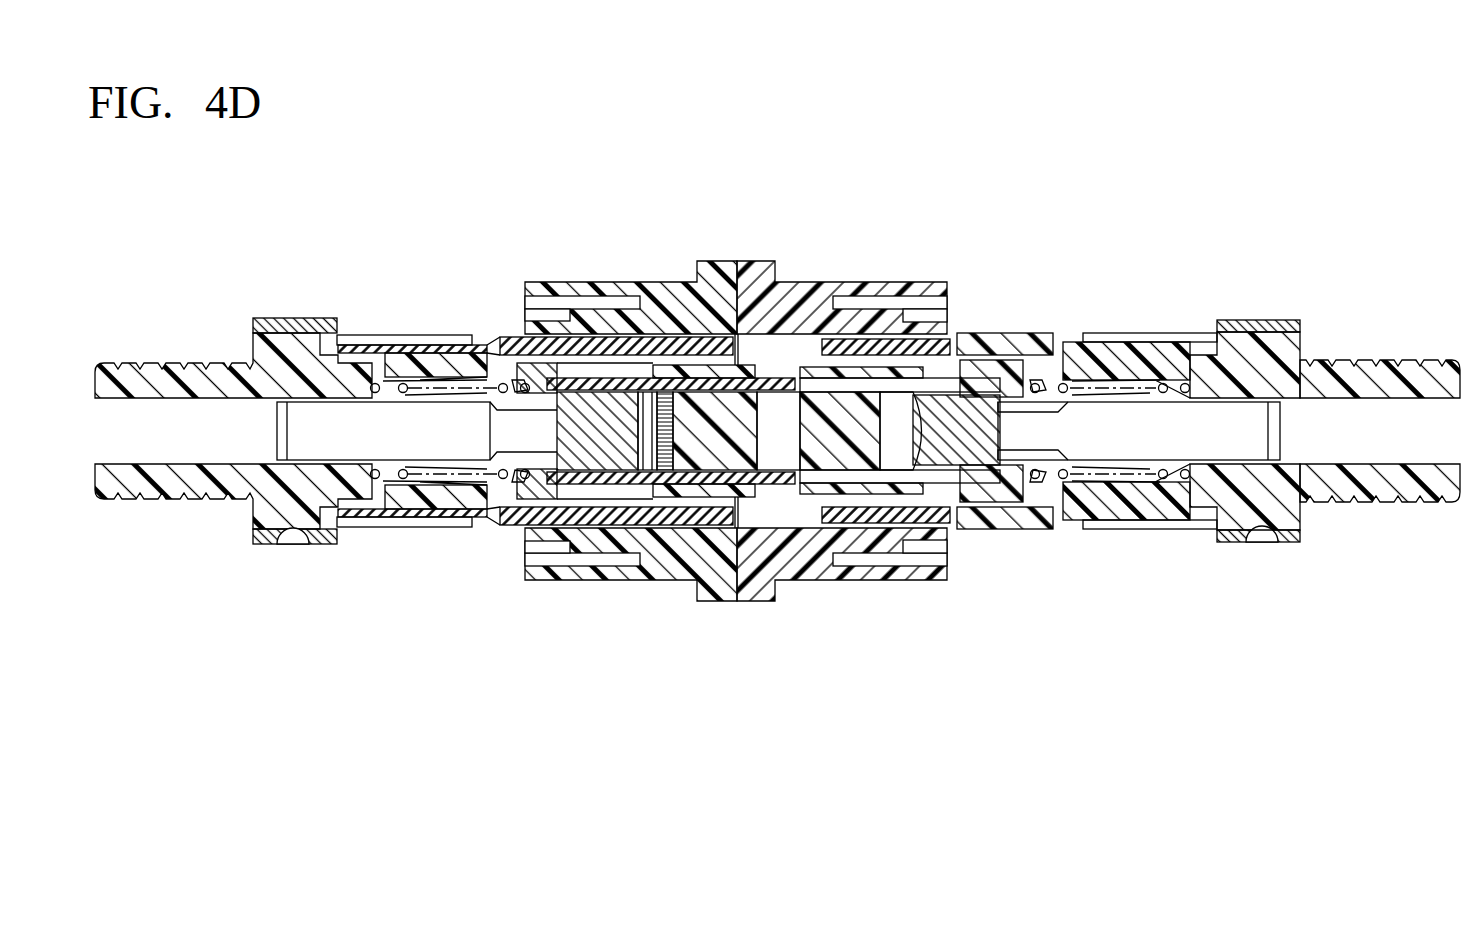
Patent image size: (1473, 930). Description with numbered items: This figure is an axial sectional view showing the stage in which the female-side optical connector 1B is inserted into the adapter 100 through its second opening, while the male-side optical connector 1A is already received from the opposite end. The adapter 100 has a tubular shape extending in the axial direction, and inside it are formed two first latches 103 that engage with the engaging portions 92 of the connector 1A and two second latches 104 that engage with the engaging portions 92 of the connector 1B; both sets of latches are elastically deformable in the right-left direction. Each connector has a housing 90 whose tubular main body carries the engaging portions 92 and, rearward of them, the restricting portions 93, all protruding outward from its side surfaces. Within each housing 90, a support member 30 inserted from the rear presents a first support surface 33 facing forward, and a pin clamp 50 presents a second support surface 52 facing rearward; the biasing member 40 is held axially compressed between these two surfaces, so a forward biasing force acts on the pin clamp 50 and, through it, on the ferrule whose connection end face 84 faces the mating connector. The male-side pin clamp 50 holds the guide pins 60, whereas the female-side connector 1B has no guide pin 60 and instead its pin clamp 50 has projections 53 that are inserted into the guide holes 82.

The male-side optical connector 1A is at (220, 302).
The female-side optical connector 1B is at (1122, 302).
The support member 30 is at (155, 505).
The first support surface 33 is at (380, 482).
The biasing member 40 is at (400, 388).
The pin clamp 50 is at (535, 500).
The second support surface 52 is at (520, 485).
The projections 53 is at (957, 380).
The guide pin 60 is at (760, 445).
The guide holes 82 is at (832, 396).
The connection end face 84 is at (775, 408).
The housing 90 is at (306, 316).
The engaging portions 92 is at (590, 336).
The restricting portions 93 is at (510, 332).
The adapter 100 is at (737, 256).
The first latches 103 is at (545, 336).
The second latches 104 is at (912, 340).